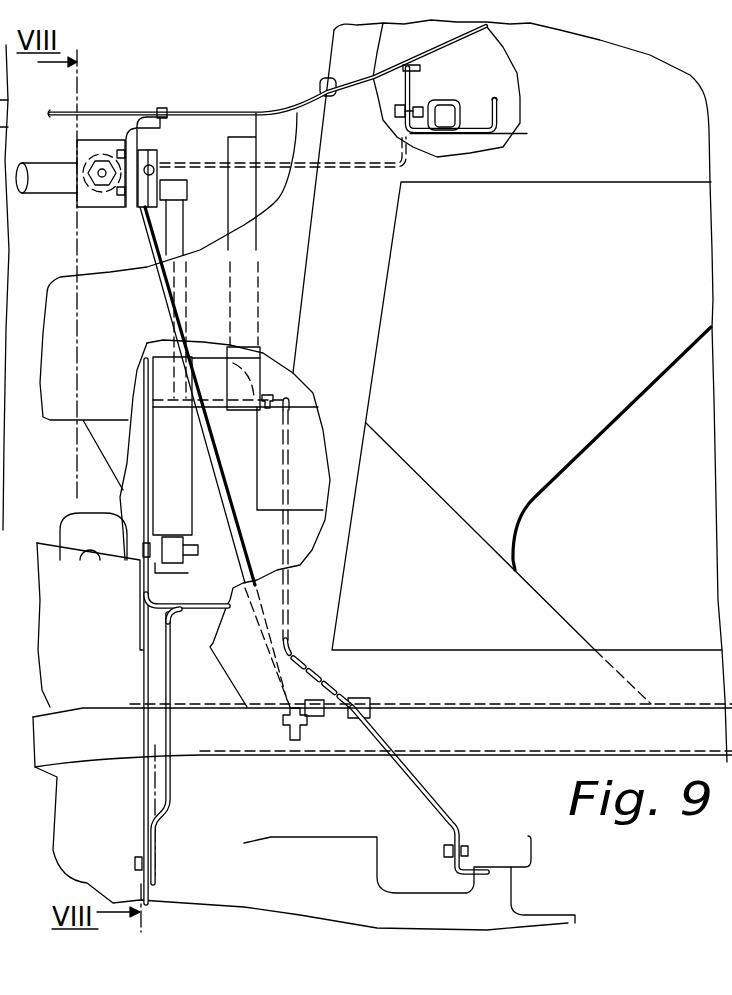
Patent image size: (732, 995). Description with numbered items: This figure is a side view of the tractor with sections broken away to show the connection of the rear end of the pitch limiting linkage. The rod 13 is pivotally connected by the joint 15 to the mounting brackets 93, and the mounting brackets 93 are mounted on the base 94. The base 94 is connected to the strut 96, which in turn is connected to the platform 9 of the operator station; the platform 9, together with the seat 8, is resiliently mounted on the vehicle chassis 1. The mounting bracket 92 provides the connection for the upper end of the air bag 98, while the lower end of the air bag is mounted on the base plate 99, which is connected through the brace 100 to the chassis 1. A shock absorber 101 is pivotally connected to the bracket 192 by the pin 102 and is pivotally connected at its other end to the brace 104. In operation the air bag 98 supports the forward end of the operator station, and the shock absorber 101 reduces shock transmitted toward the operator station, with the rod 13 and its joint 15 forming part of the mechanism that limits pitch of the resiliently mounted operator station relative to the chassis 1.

The rod 13 is at (47, 190).
The joint 15 is at (97, 170).
The mounting brackets 93 is at (95, 142).
The base 94 is at (127, 117).
The bracket 192 is at (157, 162).
The pin 102 is at (147, 200).
The strut 96 is at (150, 257).
The air bag 98 is at (262, 262).
The mounting bracket 92 is at (344, 170).
The base plate 99 is at (140, 413).
The shock absorber 101 is at (185, 447).
The brace 100 is at (288, 540).
The brace 104 is at (150, 580).
The platform 9 is at (447, 700).
The vehicle chassis 1 is at (324, 843).
The seat 8 is at (7, 902).